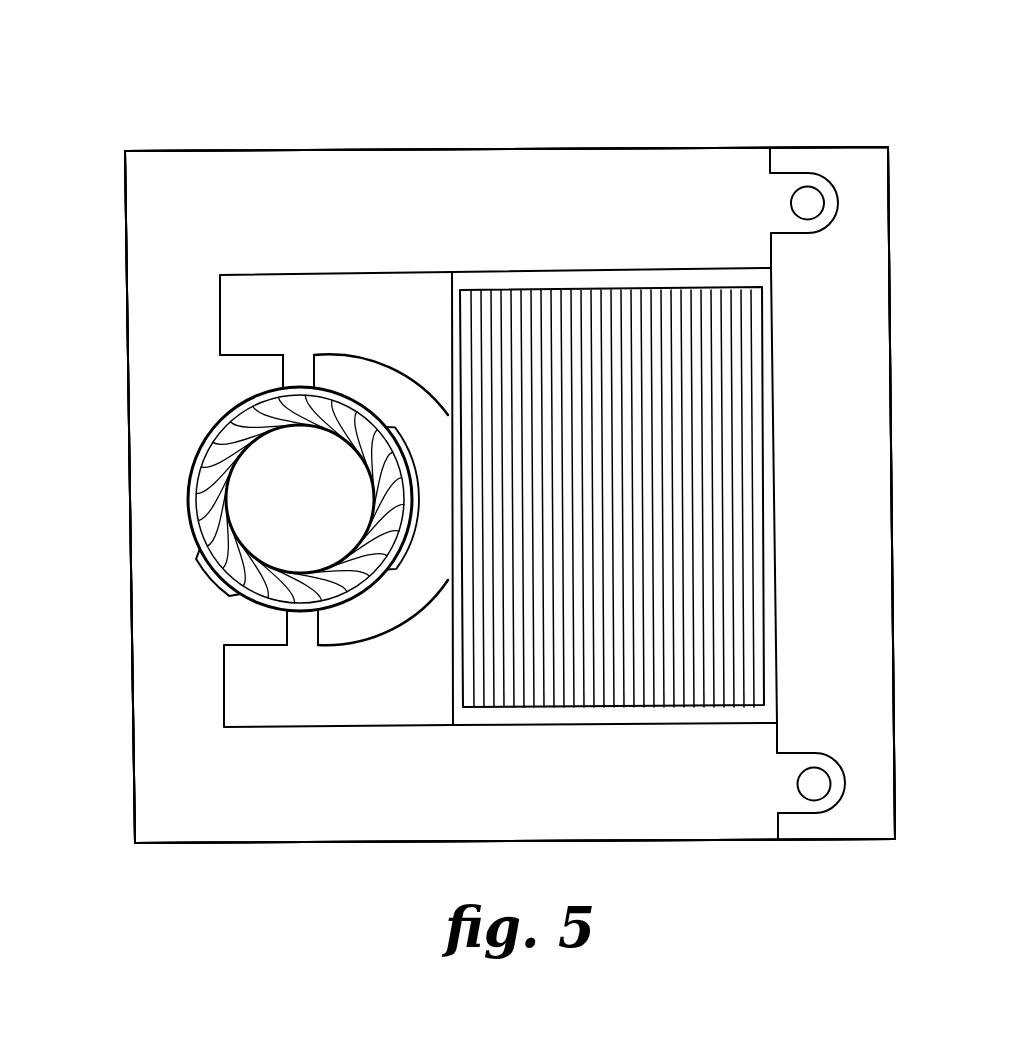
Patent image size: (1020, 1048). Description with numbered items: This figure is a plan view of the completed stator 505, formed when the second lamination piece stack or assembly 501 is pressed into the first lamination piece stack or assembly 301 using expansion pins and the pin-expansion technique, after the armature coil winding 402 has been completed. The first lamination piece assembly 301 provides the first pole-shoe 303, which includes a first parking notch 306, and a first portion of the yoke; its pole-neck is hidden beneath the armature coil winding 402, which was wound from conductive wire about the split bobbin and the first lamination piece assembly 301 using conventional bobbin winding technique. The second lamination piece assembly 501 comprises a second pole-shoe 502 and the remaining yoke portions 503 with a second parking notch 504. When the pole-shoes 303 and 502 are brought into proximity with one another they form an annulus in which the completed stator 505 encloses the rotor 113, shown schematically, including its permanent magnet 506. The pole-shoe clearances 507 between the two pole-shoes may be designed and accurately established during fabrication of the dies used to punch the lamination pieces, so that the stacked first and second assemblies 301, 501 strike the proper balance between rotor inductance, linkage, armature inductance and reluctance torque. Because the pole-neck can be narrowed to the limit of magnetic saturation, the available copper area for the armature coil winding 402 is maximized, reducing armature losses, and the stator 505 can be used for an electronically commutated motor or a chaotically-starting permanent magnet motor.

The stator 505 is at (899, 134).
The second lamination piece assembly 501 is at (310, 152).
The remaining yoke portions 503 is at (422, 170).
The first lamination piece assembly 301 is at (890, 316).
The armature coil winding 402 is at (598, 353).
The first parking notch 306 is at (385, 417).
The first pole-shoe 303 is at (415, 557).
The pole-shoe clearances 507 is at (314, 344).
The second pole-shoe 502 is at (187, 491).
The permanent magnet 506 is at (243, 423).
The rotor 113 is at (257, 513).
The second parking notch 504 is at (217, 578).